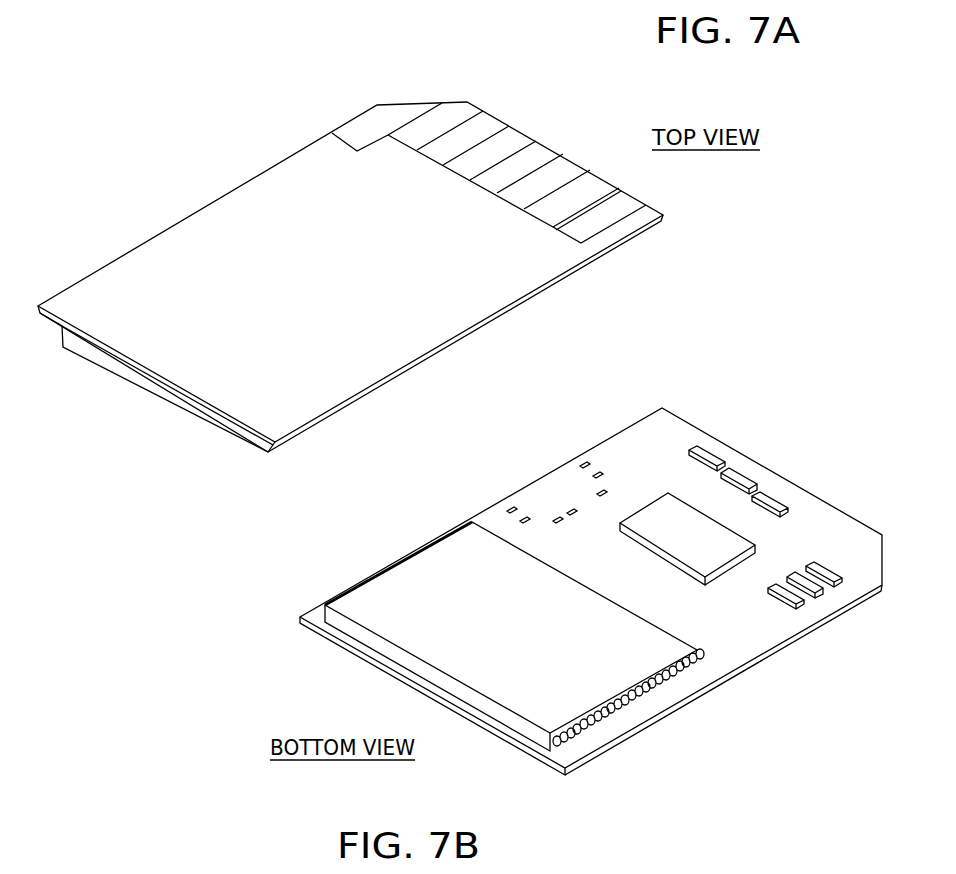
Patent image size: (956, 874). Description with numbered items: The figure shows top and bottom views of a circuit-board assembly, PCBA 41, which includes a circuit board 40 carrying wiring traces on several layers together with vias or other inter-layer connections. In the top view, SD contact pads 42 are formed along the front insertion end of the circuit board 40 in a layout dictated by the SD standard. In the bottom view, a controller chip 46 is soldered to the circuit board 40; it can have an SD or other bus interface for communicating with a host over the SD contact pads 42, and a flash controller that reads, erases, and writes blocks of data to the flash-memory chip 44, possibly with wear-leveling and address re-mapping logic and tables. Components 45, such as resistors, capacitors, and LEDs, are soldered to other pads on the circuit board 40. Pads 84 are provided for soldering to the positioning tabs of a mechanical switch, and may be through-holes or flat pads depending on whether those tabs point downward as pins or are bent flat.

In FIG. 7A, the circuit board 40 is at (345, 291).
In FIG. 7B, the circuit board 40 is at (740, 627).
In FIG. 7A, the PCBA 41 is at (350, 252).
In FIG. 7B, the PCBA 41 is at (599, 579).
In FIG. 7A, the SD contact pads 42 is at (478, 126).
In FIG. 7B, the flash-memory chip 44 is at (538, 644).
In FIG. 7B, the components 45 is at (800, 598).
In FIG. 7B, the controller chip 46 is at (692, 539).
In FIG. 7B, the pads 84 is at (585, 462).